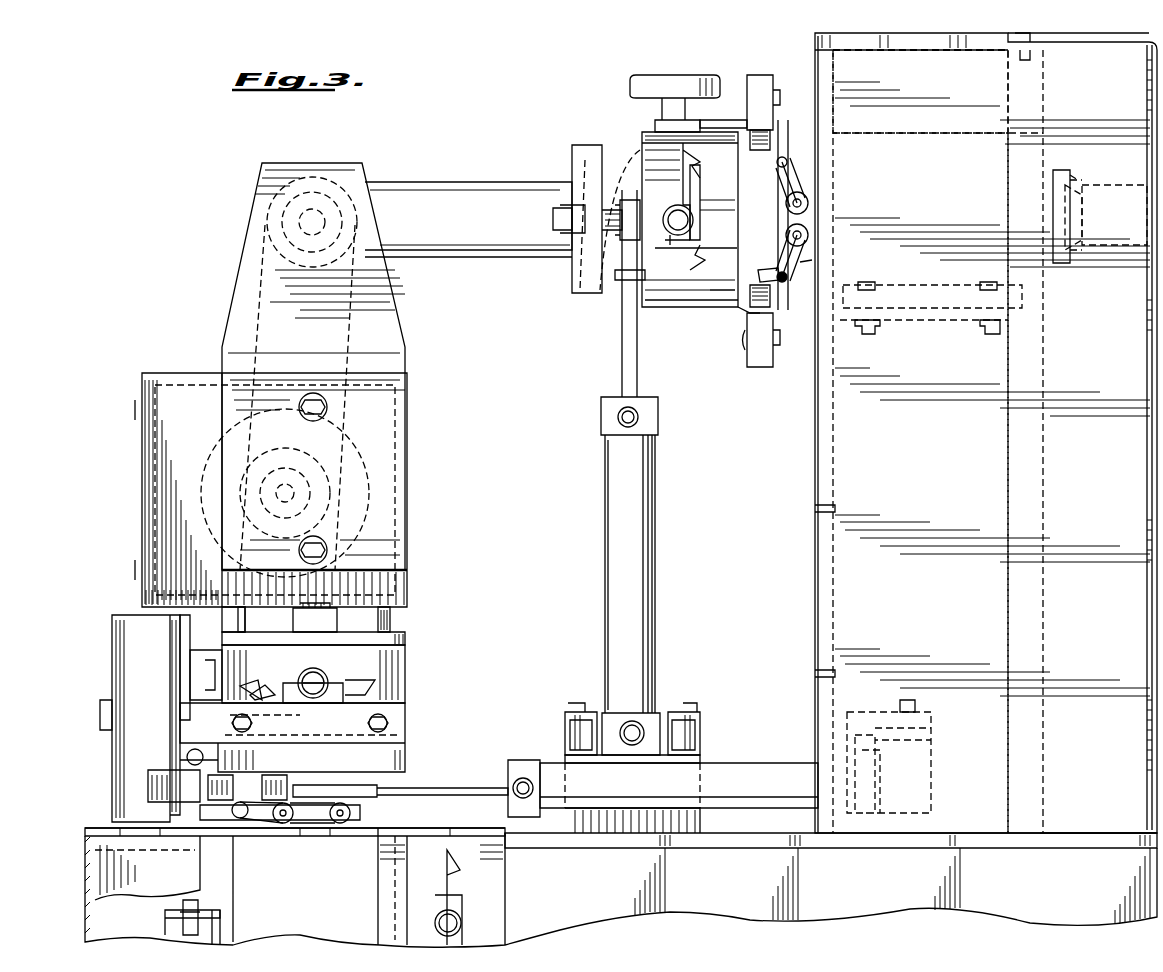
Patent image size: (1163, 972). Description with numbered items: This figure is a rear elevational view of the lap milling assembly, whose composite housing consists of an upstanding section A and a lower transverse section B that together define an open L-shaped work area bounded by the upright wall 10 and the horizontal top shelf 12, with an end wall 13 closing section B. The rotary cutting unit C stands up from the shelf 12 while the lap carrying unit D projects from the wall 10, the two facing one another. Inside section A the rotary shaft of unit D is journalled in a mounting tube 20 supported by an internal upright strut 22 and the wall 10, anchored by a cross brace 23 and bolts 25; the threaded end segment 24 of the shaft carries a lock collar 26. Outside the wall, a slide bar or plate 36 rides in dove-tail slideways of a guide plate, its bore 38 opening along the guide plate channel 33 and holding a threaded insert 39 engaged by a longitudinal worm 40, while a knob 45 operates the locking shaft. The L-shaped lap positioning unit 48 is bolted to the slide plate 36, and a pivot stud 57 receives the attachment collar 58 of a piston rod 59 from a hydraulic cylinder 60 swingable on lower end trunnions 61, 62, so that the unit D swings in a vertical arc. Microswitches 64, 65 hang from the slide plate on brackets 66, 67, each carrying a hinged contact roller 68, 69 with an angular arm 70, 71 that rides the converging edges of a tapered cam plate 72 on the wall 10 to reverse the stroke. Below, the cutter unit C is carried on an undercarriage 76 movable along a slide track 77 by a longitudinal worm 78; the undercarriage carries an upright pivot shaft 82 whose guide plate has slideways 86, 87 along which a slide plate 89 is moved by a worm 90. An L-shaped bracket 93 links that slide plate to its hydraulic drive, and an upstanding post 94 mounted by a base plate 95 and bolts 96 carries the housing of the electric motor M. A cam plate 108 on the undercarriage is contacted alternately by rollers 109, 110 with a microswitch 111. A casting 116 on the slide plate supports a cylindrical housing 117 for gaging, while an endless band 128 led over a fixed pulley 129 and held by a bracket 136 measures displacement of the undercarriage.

The upstanding section A is at (1122, 33).
The lower, transverse section B is at (1064, 828).
The rotary cutting unit C is at (425, 610).
The lap carrying unit D is at (571, 136).
The electric motor M is at (220, 455).
The upright wall 10 is at (815, 496).
The horizontal top shelf 12 is at (750, 829).
The end wall 13 is at (85, 878).
The mounting tube 20 is at (920, 128).
The internal, upright strut 22 is at (1010, 462).
The cross brace 23 is at (920, 340).
The terminally projecting end segment 24 is at (1135, 180).
The bolts 25 is at (864, 340).
The lock collar 26 is at (1065, 170).
The longitudinal channel 33 is at (700, 250).
The slide bar or plate 36 is at (645, 131).
The incompletely cylindrical bore 38 is at (678, 236).
The threaded insert 39 is at (712, 185).
The longitudinal screw or worm 40 is at (678, 205).
The knob 45 is at (632, 86).
The L-shaped lap positioning unit 48 is at (397, 366).
The pivot stud 57 is at (612, 205).
The terminal attachment collar 58 is at (604, 235).
The piston rod 59 is at (622, 338).
The hydraulic cylinder 60 is at (612, 508).
The lower end trunnion 61 is at (566, 735).
The lower end trunnion 62 is at (700, 740).
The microswitch 64 is at (770, 55).
The microswitch 65 is at (752, 367).
The bracket 66 is at (748, 106).
The bracket 67 is at (735, 322).
The hinged contact roller 68 is at (786, 206).
The hinged contact roller 69 is at (786, 236).
The angular arm 70 is at (770, 165).
The angular arm 71 is at (762, 272).
The tapered cam plate 72 is at (812, 260).
The undercarriage 76 is at (441, 886).
The slide track 77 is at (452, 858).
The longitudinal worm 78 is at (462, 923).
The pivot shaft 82 is at (406, 757).
The slideway 86 is at (395, 692).
The slideway 87 is at (255, 682).
The slide plate 89 is at (313, 674).
The worm 90 is at (328, 680).
The L-shaped bracket 93 is at (218, 648).
The upstanding post 94 is at (247, 619).
The base plate 95 is at (407, 635).
The bolts 96 is at (338, 612).
The cam plate 108 is at (96, 828).
The contact roller 109 is at (292, 826).
The contact roller 110 is at (345, 826).
The microswitch 111 is at (160, 772).
The laterally projecting block or casting 116 is at (185, 688).
The hollow cylindrical housing 117 is at (157, 670).
The endless band 128 is at (220, 893).
The fixed pulley 129 is at (222, 920).
The bracket 136 is at (165, 915).